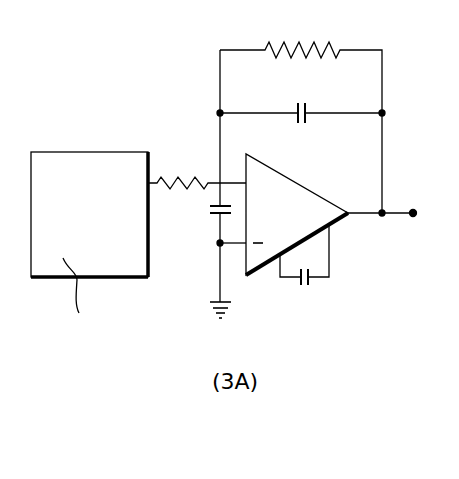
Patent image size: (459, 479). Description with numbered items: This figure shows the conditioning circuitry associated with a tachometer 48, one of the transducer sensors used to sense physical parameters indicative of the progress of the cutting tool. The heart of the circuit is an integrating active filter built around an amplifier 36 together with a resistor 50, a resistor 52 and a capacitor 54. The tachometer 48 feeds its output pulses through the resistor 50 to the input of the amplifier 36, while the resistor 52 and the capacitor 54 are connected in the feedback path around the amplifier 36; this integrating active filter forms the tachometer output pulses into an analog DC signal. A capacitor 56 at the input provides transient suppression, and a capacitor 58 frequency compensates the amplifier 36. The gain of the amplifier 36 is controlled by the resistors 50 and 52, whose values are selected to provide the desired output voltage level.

The tachometer 48 is at (105, 220).
The resistor 50 is at (188, 177).
The capacitor 56 is at (212, 205).
The amplifier 36 is at (262, 222).
The resistor 52 is at (315, 43).
The capacitor 54 is at (301, 124).
The capacitor 58 is at (298, 286).